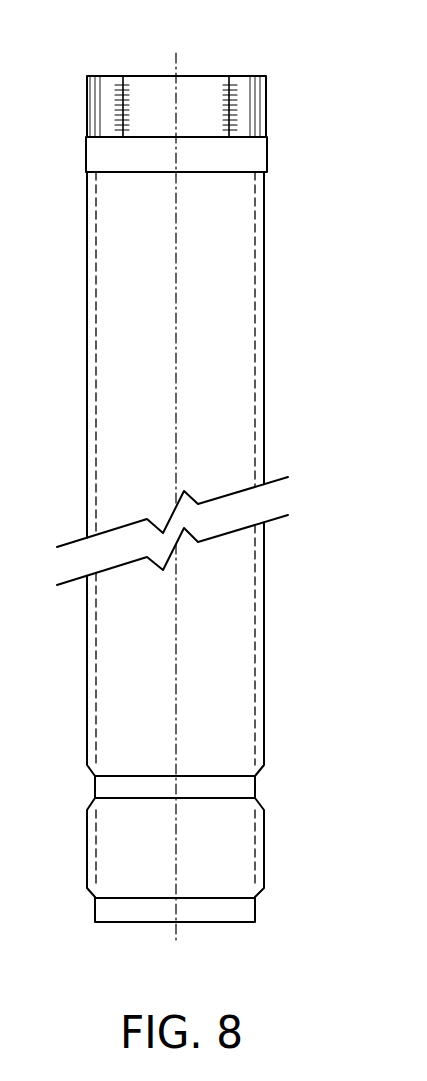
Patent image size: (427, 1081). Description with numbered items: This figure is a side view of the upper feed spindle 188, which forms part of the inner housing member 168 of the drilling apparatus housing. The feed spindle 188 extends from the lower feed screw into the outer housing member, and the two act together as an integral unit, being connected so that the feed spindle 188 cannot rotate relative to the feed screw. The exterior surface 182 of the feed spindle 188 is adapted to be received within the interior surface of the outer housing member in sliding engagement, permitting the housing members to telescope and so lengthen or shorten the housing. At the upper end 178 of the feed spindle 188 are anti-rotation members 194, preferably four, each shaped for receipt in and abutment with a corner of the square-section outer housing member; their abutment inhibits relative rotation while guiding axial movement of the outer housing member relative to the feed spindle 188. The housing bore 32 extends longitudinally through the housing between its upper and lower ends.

The housing bore 32 is at (158, 923).
The inner housing member 168 is at (265, 324).
The upper end of the inner housing member 178 is at (268, 73).
The exterior surface 182 is at (257, 267).
The upper feed spindle 188 is at (240, 384).
The anti-rotation members 194 is at (108, 87).